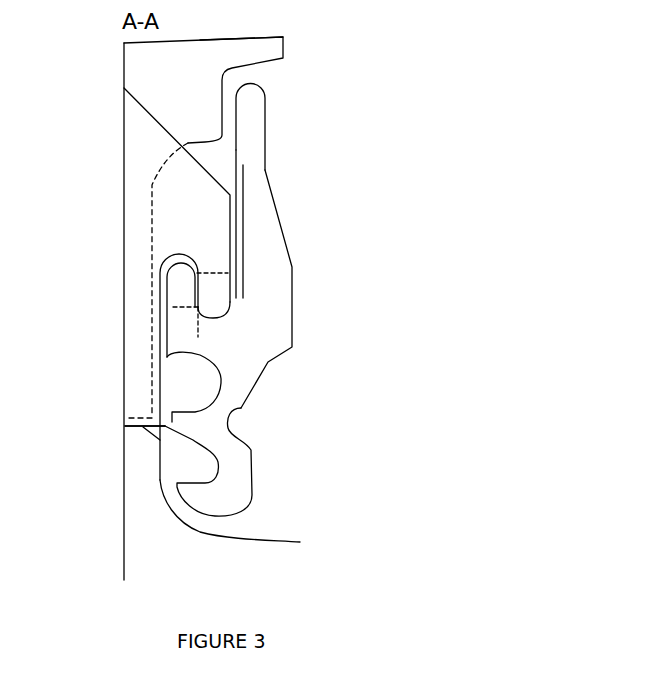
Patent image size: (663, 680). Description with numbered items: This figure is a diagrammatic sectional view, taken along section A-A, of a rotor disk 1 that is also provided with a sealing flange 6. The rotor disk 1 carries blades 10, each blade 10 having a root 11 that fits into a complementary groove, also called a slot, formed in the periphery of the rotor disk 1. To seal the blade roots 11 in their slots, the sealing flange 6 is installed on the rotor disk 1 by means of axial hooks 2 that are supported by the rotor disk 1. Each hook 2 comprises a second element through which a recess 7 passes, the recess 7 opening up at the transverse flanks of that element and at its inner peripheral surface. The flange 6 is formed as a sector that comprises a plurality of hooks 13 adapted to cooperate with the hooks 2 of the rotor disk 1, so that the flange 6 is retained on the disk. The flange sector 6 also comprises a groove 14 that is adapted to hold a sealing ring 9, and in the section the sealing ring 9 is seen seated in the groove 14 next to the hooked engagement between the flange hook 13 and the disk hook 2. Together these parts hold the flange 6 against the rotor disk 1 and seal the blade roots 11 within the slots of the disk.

The rotor disk 1 is at (262, 534).
The hook 2 is at (232, 161).
The sealing flange 6 is at (276, 102).
The recess 7 is at (218, 298).
The sealing ring 9 is at (204, 432).
The blade 10 is at (265, 46).
The root 11 is at (140, 360).
The hook 13 is at (168, 291).
The groove 14 is at (175, 478).